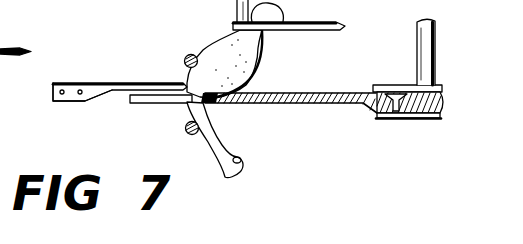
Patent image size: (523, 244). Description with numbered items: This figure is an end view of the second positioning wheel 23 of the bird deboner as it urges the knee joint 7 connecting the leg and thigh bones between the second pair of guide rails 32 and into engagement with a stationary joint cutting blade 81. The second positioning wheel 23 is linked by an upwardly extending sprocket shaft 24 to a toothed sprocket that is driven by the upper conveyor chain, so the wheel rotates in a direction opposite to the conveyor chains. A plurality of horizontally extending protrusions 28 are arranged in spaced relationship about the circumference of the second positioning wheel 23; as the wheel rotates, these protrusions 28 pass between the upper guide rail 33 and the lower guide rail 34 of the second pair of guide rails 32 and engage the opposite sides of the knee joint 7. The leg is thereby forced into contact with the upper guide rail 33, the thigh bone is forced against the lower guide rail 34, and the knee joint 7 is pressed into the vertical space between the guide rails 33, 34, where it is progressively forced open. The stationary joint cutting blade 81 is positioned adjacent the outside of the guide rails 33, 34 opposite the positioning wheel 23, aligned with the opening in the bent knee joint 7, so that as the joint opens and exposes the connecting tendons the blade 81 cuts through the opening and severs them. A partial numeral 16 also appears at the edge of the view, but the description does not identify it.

The pointer 16 is at (15, 37).
The second pair of guide rails 32 is at (172, 70).
The stationary joint cutting blade 81 is at (60, 102).
The knee joint 7 is at (176, 103).
The protrusions 28 is at (268, 93).
The second positioning wheel 23 is at (394, 132).
The sprocket shaft 24 is at (420, 58).
The upper guide rail 33 is at (189, 54).
The lower guide rail 34 is at (184, 127).